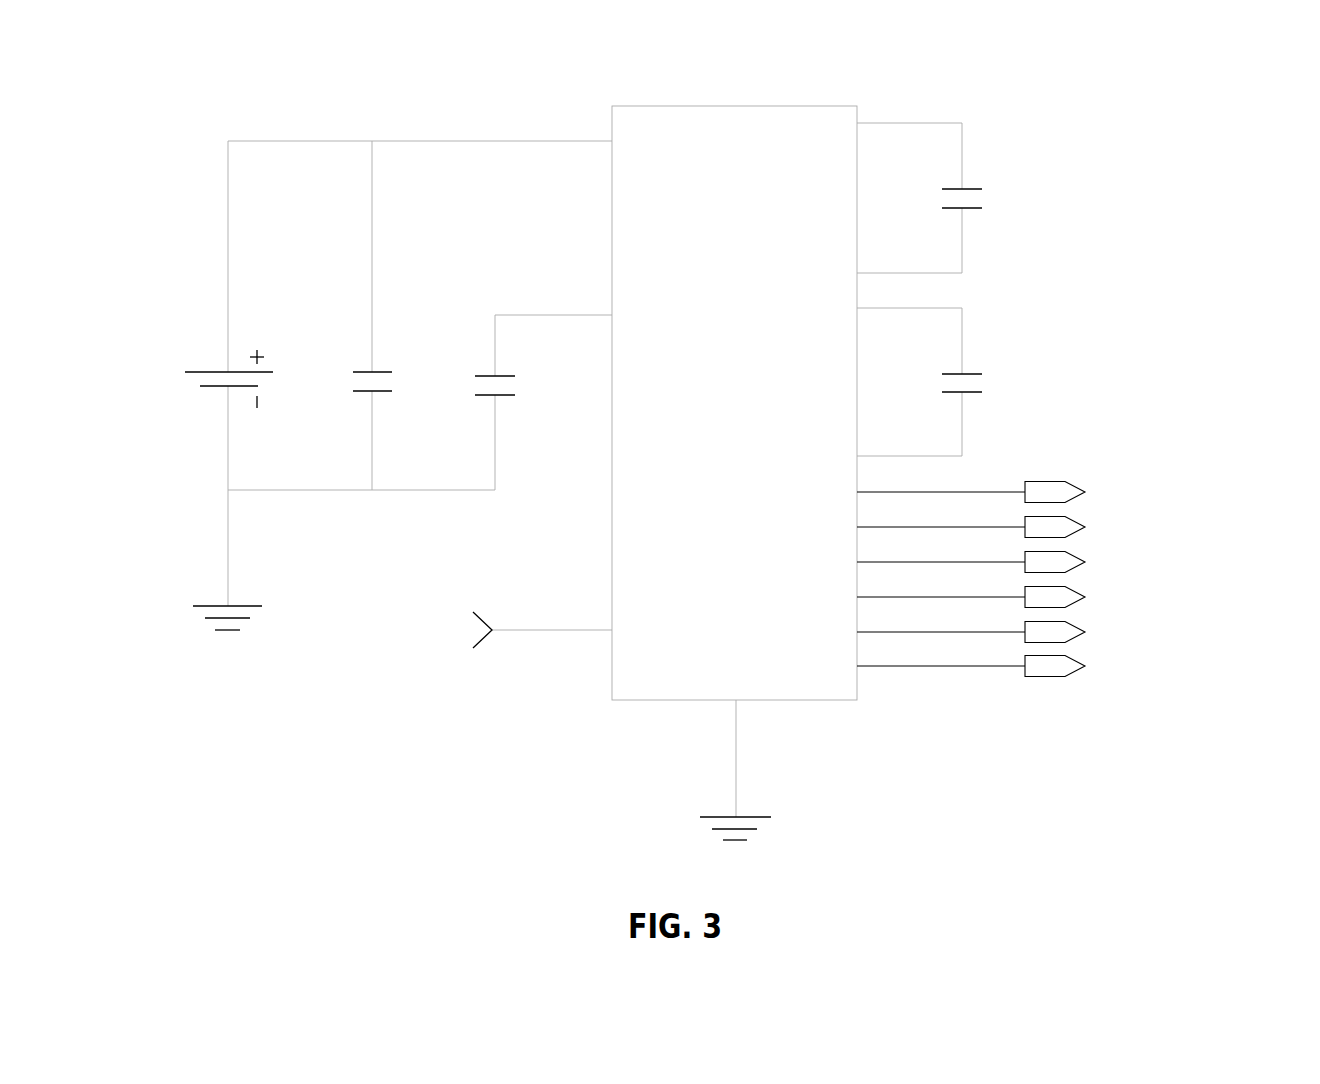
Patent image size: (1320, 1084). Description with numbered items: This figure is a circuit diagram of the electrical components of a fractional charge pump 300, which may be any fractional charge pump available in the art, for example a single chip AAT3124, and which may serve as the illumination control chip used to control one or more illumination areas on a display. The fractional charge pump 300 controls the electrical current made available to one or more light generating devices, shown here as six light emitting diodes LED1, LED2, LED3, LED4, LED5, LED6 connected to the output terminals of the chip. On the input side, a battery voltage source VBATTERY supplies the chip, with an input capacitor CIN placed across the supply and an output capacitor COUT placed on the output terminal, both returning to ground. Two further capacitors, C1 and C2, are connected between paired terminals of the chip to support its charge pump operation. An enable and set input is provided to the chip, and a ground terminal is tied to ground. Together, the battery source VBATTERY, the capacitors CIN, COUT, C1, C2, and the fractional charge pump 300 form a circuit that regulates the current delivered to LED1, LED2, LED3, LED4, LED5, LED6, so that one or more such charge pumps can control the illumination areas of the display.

The fractional charge pump 300 is at (1303, 79).
The first charge pump capacitor C1 is at (983, 196).
The second charge pump capacitor C2 is at (981, 381).
The input capacitor CIN is at (386, 367).
The output capacitor COUT is at (515, 369).
The battery voltage source VBATTERY is at (194, 373).
The first LED LED1 is at (1003, 493).
The second LED LED2 is at (1003, 528).
The third LED LED3 is at (1003, 563).
The fourth LED LED4 is at (1003, 598).
The fifth LED LED5 is at (1003, 633).
The sixth LED LED6 is at (1003, 667).